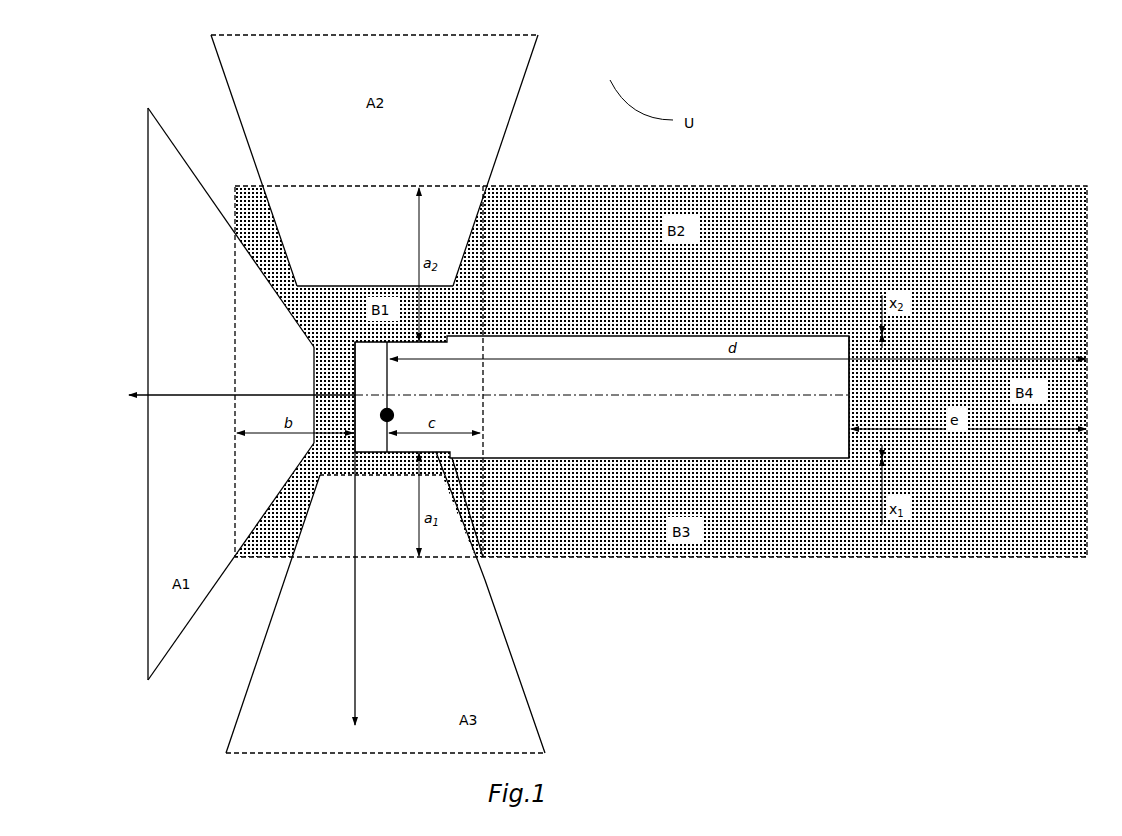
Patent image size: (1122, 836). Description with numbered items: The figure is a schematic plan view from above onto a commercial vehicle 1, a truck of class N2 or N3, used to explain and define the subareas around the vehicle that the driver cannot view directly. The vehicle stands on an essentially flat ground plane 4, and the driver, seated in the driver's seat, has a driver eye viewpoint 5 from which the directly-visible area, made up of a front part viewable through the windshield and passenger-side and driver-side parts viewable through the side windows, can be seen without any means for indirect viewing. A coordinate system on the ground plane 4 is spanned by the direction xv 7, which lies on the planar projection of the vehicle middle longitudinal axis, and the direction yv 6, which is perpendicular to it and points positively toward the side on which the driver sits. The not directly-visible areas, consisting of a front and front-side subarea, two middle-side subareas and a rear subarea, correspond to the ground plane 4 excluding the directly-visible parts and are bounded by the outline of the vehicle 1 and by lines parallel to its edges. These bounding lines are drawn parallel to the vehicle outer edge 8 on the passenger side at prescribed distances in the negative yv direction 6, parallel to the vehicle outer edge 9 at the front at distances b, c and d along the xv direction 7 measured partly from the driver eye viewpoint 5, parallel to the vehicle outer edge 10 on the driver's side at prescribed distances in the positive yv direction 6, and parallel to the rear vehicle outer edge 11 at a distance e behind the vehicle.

The commercial vehicle 1 is at (724, 437).
The ground plane 4 is at (787, 137).
The driver eye viewpoint 5 is at (380, 422).
The direction yv 6 is at (360, 662).
The direction xv 7 is at (210, 396).
The vehicle outer edge on the passenger side 8 is at (260, 227).
The vehicle outer edge front 9 is at (353, 368).
The vehicle outer edge on the driver's side 10 is at (482, 573).
The rear vehicle outer edge 11 is at (855, 387).